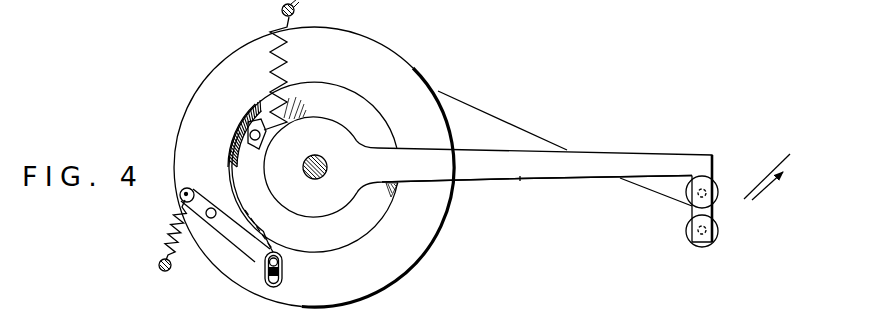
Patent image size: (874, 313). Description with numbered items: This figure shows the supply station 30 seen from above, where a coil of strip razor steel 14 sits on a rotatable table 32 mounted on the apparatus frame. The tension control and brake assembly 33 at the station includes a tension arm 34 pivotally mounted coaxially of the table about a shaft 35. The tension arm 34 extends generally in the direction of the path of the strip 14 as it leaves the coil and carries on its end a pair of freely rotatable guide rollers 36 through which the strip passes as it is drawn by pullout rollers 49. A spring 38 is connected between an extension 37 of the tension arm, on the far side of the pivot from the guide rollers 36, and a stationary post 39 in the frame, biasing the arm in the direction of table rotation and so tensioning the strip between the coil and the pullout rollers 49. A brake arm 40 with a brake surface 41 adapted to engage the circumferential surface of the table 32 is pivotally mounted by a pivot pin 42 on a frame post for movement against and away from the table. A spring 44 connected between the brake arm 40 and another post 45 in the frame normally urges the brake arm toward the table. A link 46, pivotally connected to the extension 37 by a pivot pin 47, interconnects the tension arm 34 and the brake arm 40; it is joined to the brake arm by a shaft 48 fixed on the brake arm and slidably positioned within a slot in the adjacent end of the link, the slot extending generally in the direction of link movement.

The strip razor steel 14 is at (527, 133).
The supply station 30 is at (329, 167).
The rotatable table 32 is at (334, 237).
The tension control and brake assembly 33 is at (534, 175).
The tension arm 34 is at (520, 180).
The shaft 35 is at (314, 155).
The guide rollers 36 is at (714, 220).
The extension 37 is at (265, 131).
The spring 38 is at (287, 66).
The stationary post 39 is at (295, 9).
The brake arm 40 is at (188, 188).
The brake surface 41 is at (257, 241).
The pivot pin 42 is at (212, 208).
The spring 44 is at (176, 247).
The post 45 is at (159, 263).
The link 46 is at (246, 200).
The pivot pin 47 is at (241, 129).
The shaft 48 is at (279, 252).
The pullout rollers 49 is at (266, 269).